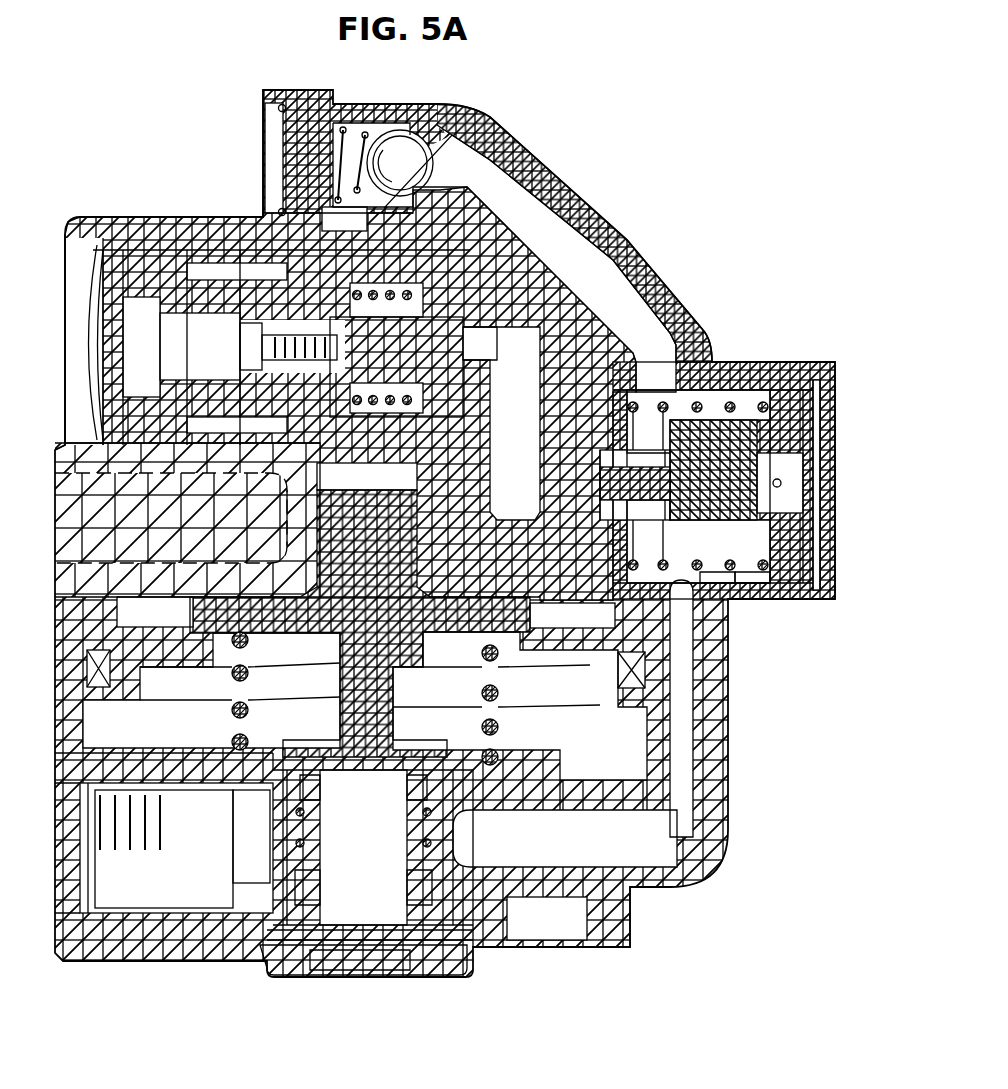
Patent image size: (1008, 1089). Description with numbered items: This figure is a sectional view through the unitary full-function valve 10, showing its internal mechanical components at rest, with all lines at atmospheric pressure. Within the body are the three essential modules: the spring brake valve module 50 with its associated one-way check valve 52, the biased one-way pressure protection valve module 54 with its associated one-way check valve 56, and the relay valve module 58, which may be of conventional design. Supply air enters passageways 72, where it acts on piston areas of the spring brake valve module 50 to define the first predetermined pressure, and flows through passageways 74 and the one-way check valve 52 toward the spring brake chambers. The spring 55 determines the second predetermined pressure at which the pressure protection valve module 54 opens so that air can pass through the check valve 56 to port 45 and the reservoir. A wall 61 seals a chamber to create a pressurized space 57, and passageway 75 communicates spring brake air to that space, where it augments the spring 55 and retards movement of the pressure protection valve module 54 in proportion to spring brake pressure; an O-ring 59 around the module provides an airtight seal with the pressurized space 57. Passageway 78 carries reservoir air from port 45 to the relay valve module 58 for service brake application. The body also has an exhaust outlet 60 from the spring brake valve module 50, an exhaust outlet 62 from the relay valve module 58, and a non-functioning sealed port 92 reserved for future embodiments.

The unitary full-function valve 10 is at (592, 156).
The port 45 is at (87, 903).
The spring brake valve module 50 is at (468, 288).
The one-way check valve 52 is at (433, 158).
The biased one-way pressure protection valve module 54 is at (715, 472).
The spring 55 is at (727, 578).
The one-way check valve 56 is at (645, 395).
The pressurized space 57 is at (748, 576).
The relay valve module 58 is at (372, 735).
The O-ring 59 is at (806, 456).
The exhaust outlet 60 is at (83, 282).
The wall 61 is at (822, 520).
The exhaust outlet 62 is at (370, 975).
The passageways 72 is at (625, 325).
The passageways 74 is at (598, 282).
The passageway 75 is at (784, 483).
The passageway 78 is at (681, 731).
The sealed port 92 is at (537, 922).